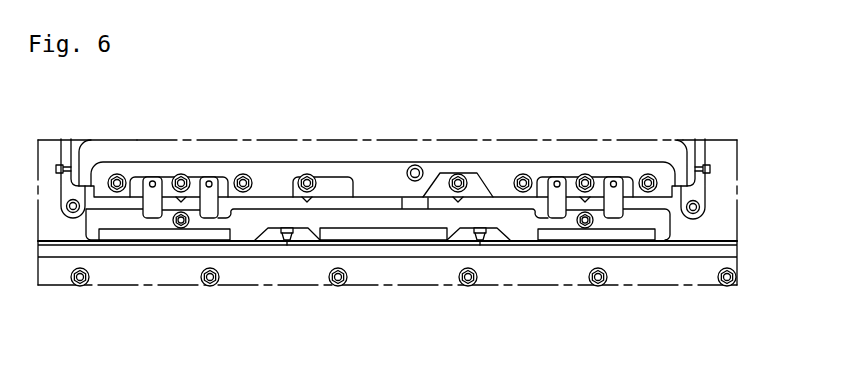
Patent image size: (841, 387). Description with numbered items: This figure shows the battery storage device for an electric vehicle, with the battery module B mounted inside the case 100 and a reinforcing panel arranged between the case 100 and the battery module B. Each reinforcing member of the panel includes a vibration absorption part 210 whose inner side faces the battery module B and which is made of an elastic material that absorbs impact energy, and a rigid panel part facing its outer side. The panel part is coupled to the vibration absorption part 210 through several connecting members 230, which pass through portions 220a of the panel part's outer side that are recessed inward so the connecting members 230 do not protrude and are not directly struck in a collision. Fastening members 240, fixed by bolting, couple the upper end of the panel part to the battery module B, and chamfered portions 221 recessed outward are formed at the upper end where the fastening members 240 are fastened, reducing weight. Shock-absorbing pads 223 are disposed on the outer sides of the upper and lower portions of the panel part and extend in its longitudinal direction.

The case 100 is at (685, 275).
The vibration absorption part 210 is at (675, 224).
The recessed portions of the panel part 220a is at (278, 220).
The chamfered portions 221 is at (212, 218).
The shock-absorbing pads 223 is at (172, 232).
The connecting members 230 is at (287, 246).
The fastening member 240 is at (152, 202).
The battery module B is at (394, 172).